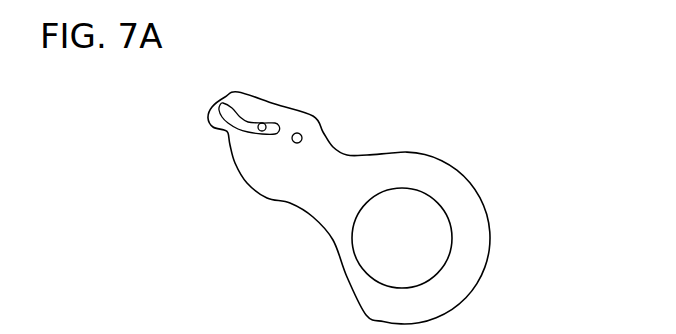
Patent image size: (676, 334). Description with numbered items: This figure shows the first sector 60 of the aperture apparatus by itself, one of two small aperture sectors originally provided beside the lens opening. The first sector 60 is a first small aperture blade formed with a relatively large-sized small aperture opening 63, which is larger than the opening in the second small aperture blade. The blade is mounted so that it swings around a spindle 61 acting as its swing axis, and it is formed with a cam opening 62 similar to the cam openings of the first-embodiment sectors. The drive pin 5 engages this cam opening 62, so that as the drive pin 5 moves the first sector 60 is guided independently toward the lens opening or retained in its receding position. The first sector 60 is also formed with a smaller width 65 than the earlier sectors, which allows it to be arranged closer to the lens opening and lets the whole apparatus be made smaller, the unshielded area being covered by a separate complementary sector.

The drive pin 5 is at (258, 129).
The first sector 60 is at (350, 170).
The spindle 61 is at (293, 142).
The cam opening 62 is at (237, 113).
The small aperture opening 63 is at (437, 237).
The width 65 is at (338, 270).